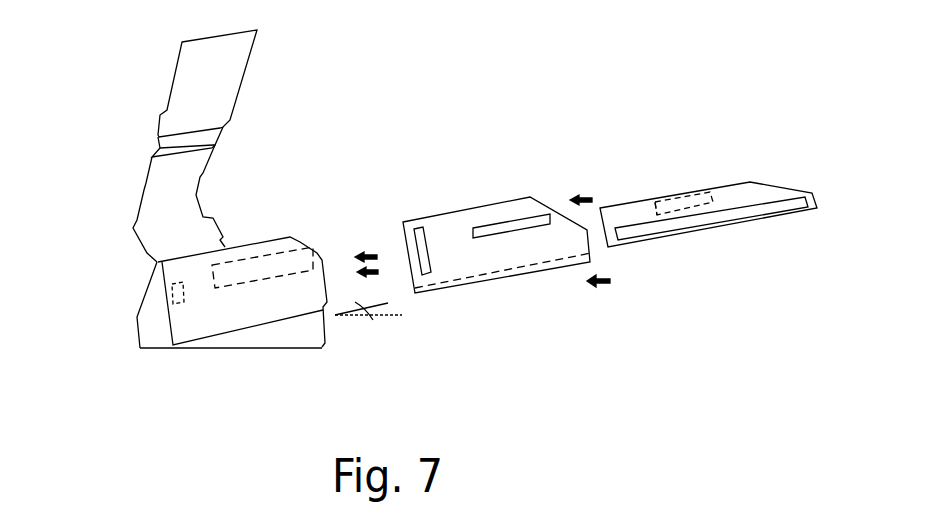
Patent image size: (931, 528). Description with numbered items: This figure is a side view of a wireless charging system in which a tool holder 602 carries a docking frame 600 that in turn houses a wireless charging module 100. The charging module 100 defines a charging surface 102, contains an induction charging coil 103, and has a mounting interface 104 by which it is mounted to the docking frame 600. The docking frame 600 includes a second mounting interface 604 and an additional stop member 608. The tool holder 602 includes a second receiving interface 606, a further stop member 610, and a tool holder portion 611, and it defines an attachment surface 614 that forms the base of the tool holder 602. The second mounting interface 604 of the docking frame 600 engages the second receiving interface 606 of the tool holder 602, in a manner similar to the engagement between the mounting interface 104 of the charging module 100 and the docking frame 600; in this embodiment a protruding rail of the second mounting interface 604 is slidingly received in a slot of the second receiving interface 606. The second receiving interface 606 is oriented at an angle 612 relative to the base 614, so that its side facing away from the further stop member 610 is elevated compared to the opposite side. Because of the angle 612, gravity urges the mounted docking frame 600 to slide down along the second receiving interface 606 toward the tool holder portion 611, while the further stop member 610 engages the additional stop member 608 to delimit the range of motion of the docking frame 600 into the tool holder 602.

The wireless charging module 100 is at (695, 240).
The charging surface 102 is at (683, 192).
The induction charging coil 103 is at (653, 212).
The mounting interface 104 is at (755, 203).
The docking frame 600 is at (523, 300).
The tool holder 602 is at (132, 285).
The second mounting interface 604 is at (465, 225).
The second receiving interface 606 is at (305, 257).
The additional stop member 608 is at (427, 277).
The further stop member 610 is at (175, 297).
The tool holder portion 611 is at (248, 150).
The angle 612 is at (373, 320).
The attachment surface 614 is at (218, 348).